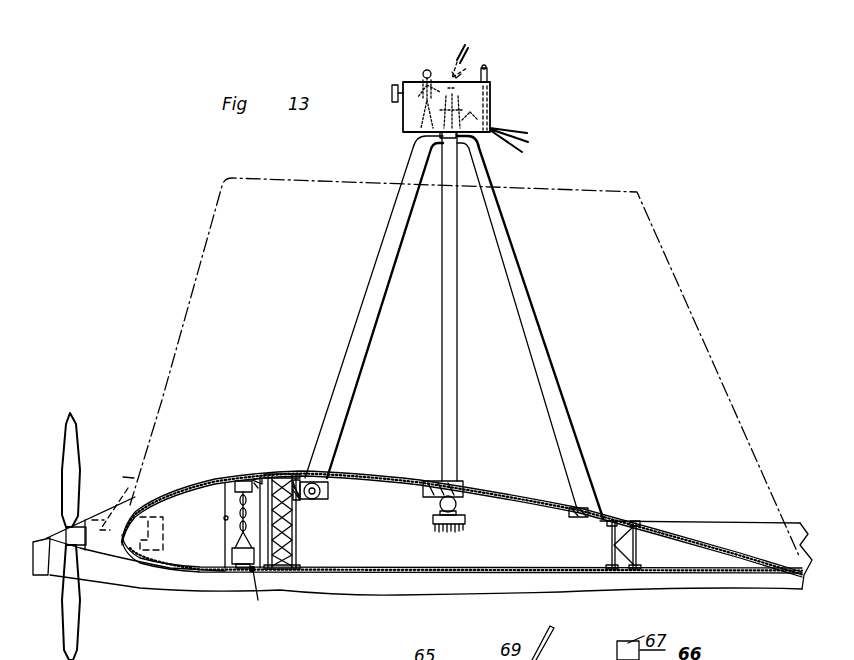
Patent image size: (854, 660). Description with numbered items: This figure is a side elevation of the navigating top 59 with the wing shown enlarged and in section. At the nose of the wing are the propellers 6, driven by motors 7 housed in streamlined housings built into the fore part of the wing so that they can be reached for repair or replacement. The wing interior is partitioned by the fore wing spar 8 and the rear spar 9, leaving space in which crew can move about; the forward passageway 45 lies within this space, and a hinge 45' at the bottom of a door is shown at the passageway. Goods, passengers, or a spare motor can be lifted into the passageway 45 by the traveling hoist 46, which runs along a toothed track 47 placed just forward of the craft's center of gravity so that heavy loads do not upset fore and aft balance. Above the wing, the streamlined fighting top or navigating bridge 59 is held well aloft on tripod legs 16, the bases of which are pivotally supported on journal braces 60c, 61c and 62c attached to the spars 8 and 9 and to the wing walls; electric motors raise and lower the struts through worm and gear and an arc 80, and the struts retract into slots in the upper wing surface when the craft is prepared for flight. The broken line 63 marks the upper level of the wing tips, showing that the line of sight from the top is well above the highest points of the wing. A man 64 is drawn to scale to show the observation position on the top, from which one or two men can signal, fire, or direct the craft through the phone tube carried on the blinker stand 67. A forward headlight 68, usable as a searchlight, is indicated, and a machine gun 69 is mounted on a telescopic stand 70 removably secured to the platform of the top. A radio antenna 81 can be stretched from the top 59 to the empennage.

The propellers 6 is at (70, 437).
The motors 7 is at (118, 498).
The fore wing spar 8 is at (296, 534).
The rear spar 9 is at (638, 548).
The tripod legs 16 is at (395, 332).
The wing forward passageway 45 is at (221, 522).
The hinge on bottom of door 45' is at (252, 590).
The traveling hoist 46 is at (240, 480).
The toothed track 47 is at (258, 478).
The navigating top 59 is at (475, 115).
The journal brace 60c is at (321, 494).
The journal brace 61c is at (582, 520).
The journal brace 62c is at (458, 504).
The broken line indicating upper level of the wing tips 63 is at (557, 183).
The man 64 is at (417, 108).
The blinker stand 67 is at (487, 70).
The forward headlight 68 is at (392, 92).
The machine gun 69 is at (455, 58).
The telescopic stand 70 is at (473, 104).
The arc 80 is at (328, 484).
The radio antenna 81 is at (512, 132).